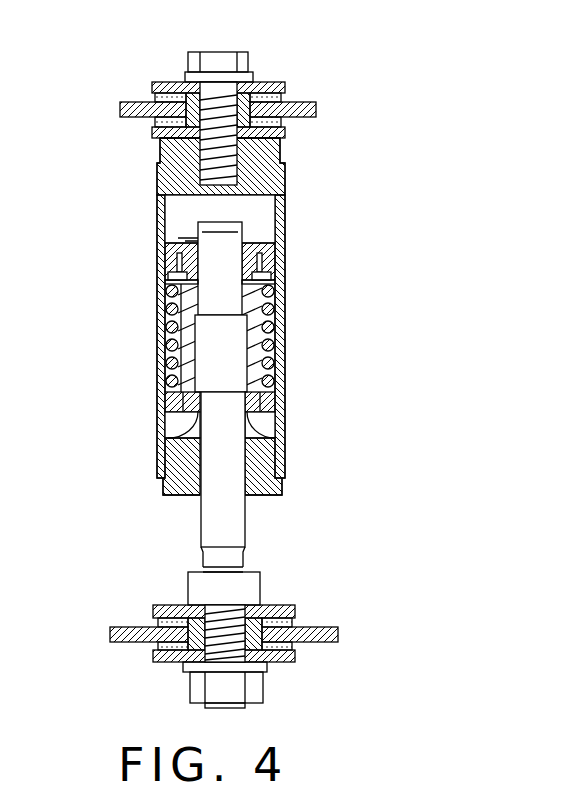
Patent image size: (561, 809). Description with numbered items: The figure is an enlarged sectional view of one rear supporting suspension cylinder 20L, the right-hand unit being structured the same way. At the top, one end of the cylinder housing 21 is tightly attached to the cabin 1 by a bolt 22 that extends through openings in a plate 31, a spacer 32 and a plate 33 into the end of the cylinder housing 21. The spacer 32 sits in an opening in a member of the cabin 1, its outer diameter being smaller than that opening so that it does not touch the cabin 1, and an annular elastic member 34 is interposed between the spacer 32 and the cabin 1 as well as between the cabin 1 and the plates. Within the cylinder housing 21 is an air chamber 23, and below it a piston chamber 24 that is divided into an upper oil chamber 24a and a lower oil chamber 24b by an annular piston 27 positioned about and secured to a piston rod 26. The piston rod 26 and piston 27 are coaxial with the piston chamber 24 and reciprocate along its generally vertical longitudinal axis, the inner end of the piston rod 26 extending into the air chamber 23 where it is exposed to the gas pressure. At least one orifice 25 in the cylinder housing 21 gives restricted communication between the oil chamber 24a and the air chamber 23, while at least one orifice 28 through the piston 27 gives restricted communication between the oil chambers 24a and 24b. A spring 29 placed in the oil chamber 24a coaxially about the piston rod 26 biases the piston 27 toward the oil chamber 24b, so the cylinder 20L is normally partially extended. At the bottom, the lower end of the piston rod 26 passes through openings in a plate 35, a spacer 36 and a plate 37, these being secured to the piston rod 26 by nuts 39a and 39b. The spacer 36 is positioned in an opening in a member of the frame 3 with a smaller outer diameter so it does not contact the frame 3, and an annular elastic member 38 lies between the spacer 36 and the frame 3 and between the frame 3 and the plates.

The cabin 1 is at (317, 108).
The frame 3 is at (110, 633).
The rear suspension 20L is at (300, 308).
The cylinder housing 21 is at (284, 238).
The bolt 22 is at (218, 58).
The air chamber 23 is at (177, 212).
The piston chamber 24 is at (166, 306).
The oil chamber 24a is at (168, 322).
The oil chamber 24b is at (168, 428).
The orifice 25 is at (284, 258).
The piston rod 26 is at (208, 522).
The annular piston 27 is at (168, 438).
The orifice 28 is at (285, 432).
The spring 29 is at (282, 357).
The plate 31 is at (285, 88).
The spacer 32 is at (263, 82).
The plate 33 is at (287, 130).
The annular elastic member 34 is at (153, 95).
The plate 35 is at (295, 608).
The spacer 36 is at (180, 665).
The plate 37 is at (300, 653).
The annular elastic member 38 is at (157, 623).
The nut 39a is at (260, 587).
The nut 39b is at (263, 688).